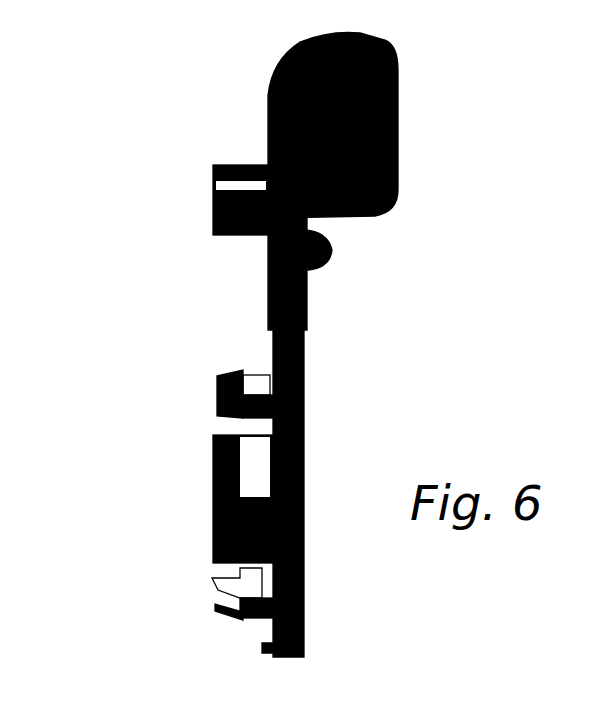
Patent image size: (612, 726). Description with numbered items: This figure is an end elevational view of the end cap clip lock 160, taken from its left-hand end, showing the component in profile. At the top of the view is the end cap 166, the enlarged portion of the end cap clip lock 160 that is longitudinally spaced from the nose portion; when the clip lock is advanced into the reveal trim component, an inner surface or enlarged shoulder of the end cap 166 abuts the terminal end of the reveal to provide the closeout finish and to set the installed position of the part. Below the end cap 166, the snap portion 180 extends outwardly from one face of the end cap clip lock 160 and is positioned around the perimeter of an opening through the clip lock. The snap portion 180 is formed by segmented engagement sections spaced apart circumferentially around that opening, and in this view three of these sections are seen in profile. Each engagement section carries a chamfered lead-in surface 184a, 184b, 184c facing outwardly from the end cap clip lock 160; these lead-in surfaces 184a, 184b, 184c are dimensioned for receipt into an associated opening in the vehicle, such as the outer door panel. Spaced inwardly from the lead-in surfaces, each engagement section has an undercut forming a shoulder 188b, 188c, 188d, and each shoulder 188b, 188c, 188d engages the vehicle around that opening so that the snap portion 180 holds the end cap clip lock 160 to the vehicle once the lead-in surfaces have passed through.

The end cap clip lock 160 is at (420, 281).
The end cap 166 is at (400, 108).
The snap portion 180 is at (150, 498).
The chamfered lead-in surface 184a is at (224, 382).
The chamfered lead-in surface 184b is at (213, 518).
The chamfered lead-in surface 184c is at (220, 614).
The shoulder 188b is at (252, 423).
The shoulder 188c is at (258, 628).
The shoulder 188d is at (253, 373).